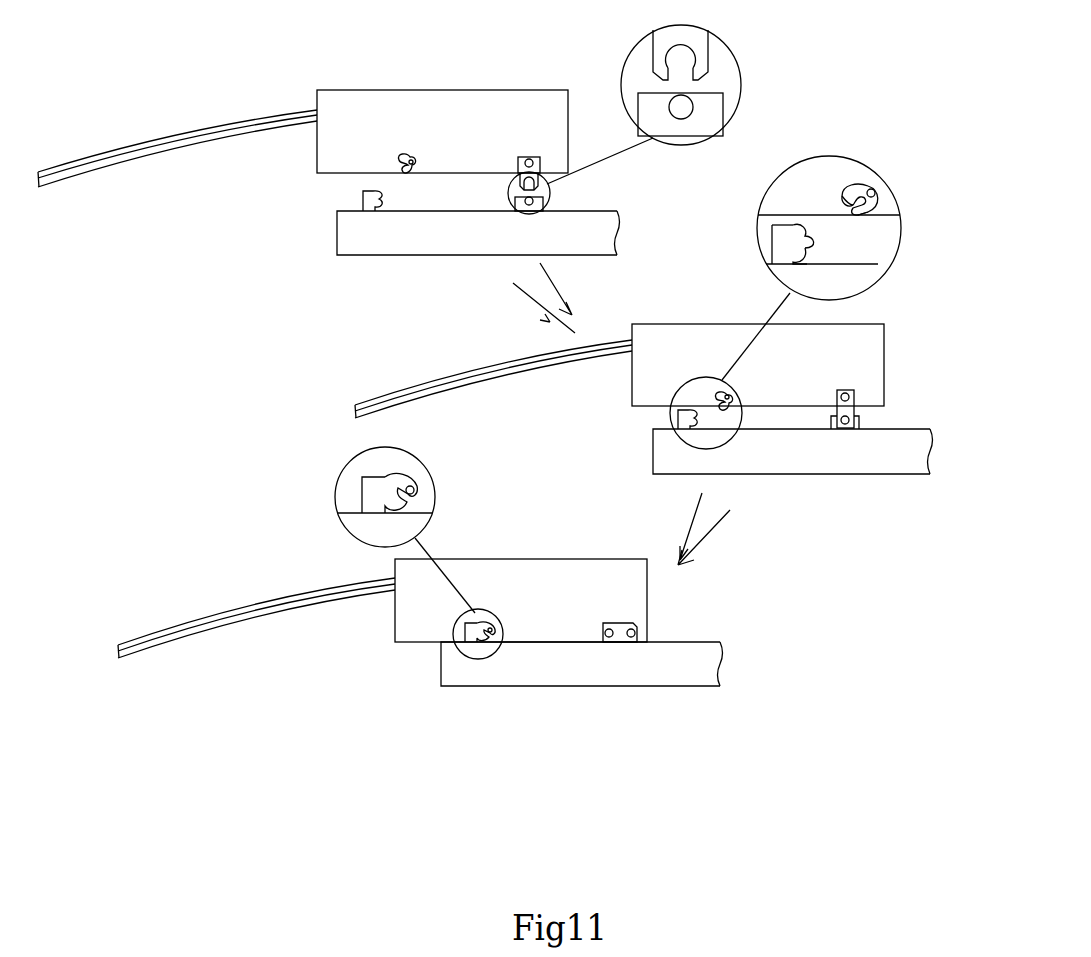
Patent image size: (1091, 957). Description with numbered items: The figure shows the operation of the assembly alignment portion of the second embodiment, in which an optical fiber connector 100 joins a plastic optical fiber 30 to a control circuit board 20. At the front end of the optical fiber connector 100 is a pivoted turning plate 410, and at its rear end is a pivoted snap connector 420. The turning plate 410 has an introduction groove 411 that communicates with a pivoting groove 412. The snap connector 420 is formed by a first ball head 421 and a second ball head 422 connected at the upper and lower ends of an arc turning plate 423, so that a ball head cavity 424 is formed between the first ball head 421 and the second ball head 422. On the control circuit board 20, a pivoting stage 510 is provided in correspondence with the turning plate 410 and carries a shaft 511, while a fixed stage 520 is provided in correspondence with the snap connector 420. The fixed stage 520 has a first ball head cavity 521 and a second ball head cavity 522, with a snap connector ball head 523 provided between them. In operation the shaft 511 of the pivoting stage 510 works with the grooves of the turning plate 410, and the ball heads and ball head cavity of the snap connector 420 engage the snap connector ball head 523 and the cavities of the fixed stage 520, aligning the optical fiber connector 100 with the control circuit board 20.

The optical fiber connector 100 is at (357, 95).
The plastic optical fiber 30 is at (182, 143).
The control circuit board 20 is at (340, 241).
The snap connector 420 is at (407, 158).
The fixed stage 520 is at (366, 203).
The turning plate 410 is at (523, 157).
The pivoting stage 510 is at (528, 214).
The introduction groove 411 is at (684, 77).
The pivoting groove 412 is at (685, 56).
The shaft 511 is at (681, 107).
The first ball head 421 is at (845, 189).
The second ball head 422 is at (861, 217).
The arc turning plate 423 is at (877, 194).
The ball head cavity 424 is at (848, 204).
The first ball head cavity 521 is at (793, 226).
The second ball head cavity 522 is at (796, 256).
The snap connector ball head 523 is at (803, 244).